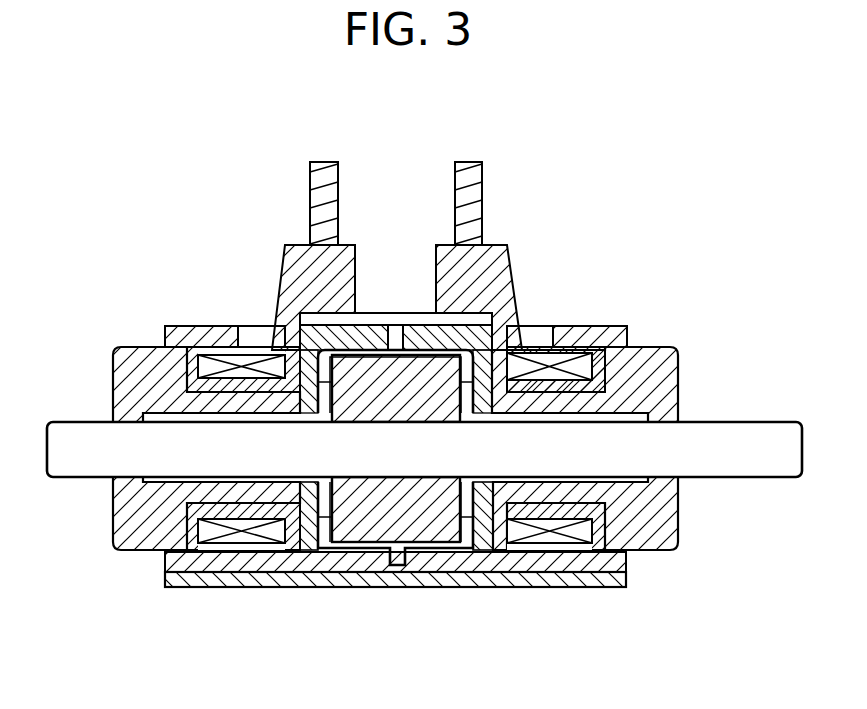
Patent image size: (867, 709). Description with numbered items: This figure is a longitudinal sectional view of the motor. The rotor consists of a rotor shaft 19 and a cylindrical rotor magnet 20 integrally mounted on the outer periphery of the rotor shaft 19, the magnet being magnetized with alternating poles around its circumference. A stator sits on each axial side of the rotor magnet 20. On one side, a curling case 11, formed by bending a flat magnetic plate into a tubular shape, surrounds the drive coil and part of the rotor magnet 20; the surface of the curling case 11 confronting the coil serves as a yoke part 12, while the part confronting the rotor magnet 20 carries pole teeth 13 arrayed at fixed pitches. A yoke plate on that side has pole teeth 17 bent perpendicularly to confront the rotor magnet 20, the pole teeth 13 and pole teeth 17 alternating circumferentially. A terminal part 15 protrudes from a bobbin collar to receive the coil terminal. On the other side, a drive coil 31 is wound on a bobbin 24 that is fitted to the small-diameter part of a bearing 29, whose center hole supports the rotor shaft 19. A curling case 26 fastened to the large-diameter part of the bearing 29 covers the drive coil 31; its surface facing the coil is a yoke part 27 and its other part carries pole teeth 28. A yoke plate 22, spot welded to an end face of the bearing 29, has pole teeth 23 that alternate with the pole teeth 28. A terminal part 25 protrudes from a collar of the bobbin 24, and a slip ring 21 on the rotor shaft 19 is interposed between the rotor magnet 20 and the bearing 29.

The curling case 11 is at (340, 586).
The yoke part 12 is at (228, 565).
The pole teeth 13 is at (358, 567).
The terminal part 15 is at (313, 170).
The pole teeth 17 is at (363, 330).
The rotor shaft 19 is at (750, 435).
The rotor magnet 20 is at (405, 530).
The slip ring 21 is at (465, 495).
The yoke plate 22 is at (518, 333).
The pole teeth 23 is at (472, 332).
The bobbin 24 is at (606, 541).
The terminal part 25 is at (478, 170).
The curling case 26 is at (478, 576).
The yoke part 27 is at (557, 560).
The pole teeth 28 is at (433, 558).
The bearing 29 is at (663, 362).
The drive coil 31 is at (587, 332).